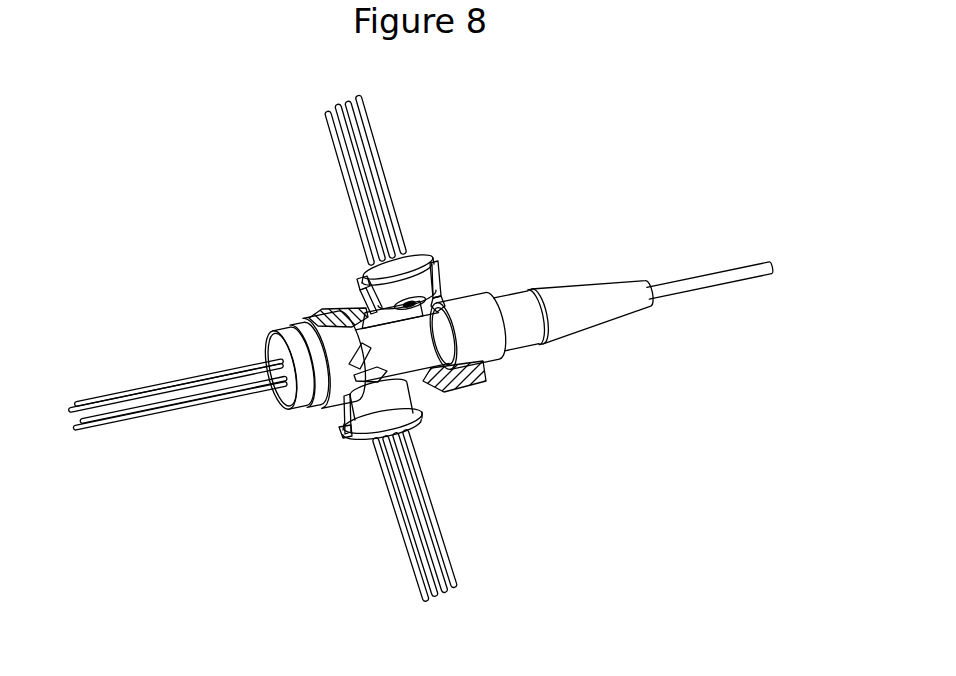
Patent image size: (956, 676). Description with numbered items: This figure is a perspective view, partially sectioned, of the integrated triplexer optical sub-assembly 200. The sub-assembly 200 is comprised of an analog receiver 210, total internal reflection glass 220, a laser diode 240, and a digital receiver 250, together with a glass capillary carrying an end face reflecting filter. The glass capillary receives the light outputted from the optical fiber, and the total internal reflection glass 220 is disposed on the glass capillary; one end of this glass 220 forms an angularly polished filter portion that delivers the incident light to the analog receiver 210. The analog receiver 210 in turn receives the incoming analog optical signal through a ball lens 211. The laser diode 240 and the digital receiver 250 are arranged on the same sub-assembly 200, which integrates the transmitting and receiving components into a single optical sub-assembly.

The integrated triplexer optical sub-assembly 200 is at (543, 191).
The analog receiver 210 is at (365, 276).
The ball lens 211 is at (438, 296).
The total internal reflection glass 220 is at (340, 306).
The laser diode 240 is at (291, 405).
The digital receiver 250 is at (350, 433).